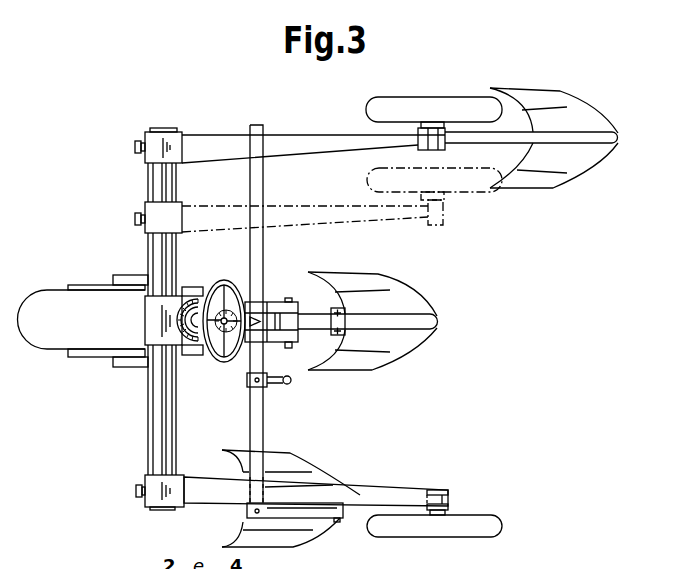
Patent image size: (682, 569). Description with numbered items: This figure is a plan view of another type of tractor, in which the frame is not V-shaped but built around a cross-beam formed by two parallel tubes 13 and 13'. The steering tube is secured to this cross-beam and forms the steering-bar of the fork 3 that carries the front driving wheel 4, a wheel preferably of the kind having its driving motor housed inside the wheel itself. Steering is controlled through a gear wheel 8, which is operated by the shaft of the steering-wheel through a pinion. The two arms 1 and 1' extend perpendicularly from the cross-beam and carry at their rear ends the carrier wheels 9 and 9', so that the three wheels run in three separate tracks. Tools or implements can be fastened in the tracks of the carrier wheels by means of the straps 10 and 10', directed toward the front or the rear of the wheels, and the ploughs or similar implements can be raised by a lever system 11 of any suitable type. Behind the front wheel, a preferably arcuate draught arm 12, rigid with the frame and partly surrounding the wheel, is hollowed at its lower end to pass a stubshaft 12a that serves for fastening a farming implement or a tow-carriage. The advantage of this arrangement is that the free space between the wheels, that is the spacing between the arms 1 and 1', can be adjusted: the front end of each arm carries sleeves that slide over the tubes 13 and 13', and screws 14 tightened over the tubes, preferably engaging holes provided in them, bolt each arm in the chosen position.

The arm 1 is at (316, 505).
The arm 1' is at (313, 126).
The fork 3 is at (120, 275).
The driving wheel 4 is at (111, 321).
The gear wheel 8 is at (193, 300).
The carrier wheel 9 is at (440, 513).
The carrier wheel 9' is at (434, 94).
The strap 10 is at (432, 487).
The strap 10' is at (454, 144).
The lever system 11 is at (262, 430).
The draught arm 12 is at (270, 302).
The stubshaft 12a is at (290, 343).
The tube 13 is at (142, 301).
The tube 13' is at (138, 319).
The screw 14 is at (135, 145).